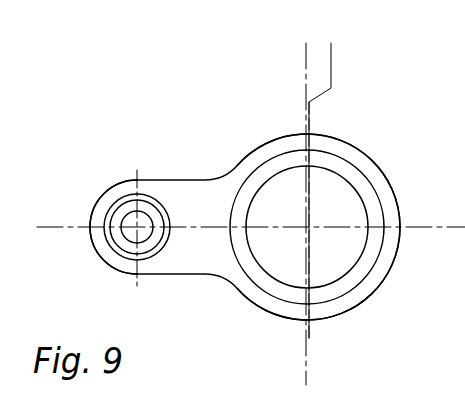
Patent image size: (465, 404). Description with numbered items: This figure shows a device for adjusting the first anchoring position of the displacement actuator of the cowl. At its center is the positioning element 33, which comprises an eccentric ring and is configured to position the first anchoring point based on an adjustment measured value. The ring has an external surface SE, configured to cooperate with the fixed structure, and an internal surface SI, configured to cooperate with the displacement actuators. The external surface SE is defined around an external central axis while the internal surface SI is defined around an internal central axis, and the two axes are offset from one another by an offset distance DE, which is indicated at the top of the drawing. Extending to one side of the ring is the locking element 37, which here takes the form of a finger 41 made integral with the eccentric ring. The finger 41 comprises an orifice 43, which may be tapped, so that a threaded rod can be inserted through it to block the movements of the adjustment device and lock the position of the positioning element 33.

The positioning element 33 is at (463, 306).
The locking element 37 is at (120, 156).
The finger 41 is at (164, 286).
The orifice 43 is at (130, 236).
The external surface SE is at (378, 146).
The internal surface SI is at (337, 190).
The offset distance DE is at (270, 61).